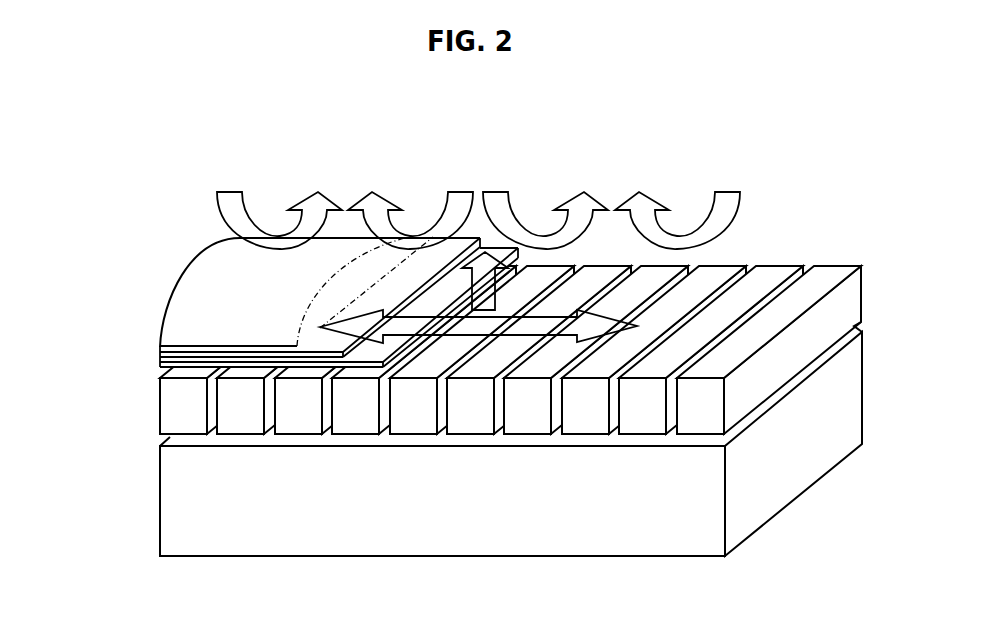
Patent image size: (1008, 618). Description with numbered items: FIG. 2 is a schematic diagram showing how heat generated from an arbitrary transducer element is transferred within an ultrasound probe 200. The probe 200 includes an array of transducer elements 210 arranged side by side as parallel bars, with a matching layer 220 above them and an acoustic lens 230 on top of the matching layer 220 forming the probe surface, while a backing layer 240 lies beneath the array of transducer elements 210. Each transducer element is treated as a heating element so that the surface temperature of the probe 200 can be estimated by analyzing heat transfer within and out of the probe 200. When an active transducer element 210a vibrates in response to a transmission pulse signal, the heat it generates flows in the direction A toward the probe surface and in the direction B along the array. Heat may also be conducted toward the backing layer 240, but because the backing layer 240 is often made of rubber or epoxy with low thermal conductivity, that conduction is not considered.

The probe 200 is at (811, 137).
The array of transducer elements 210 is at (481, 433).
The active transducer element 210a is at (413, 417).
The matching layer 220 is at (144, 346).
The acoustic lens 230 is at (172, 292).
The backing layer 240 is at (160, 498).
The direction A is at (486, 256).
The direction B is at (602, 338).